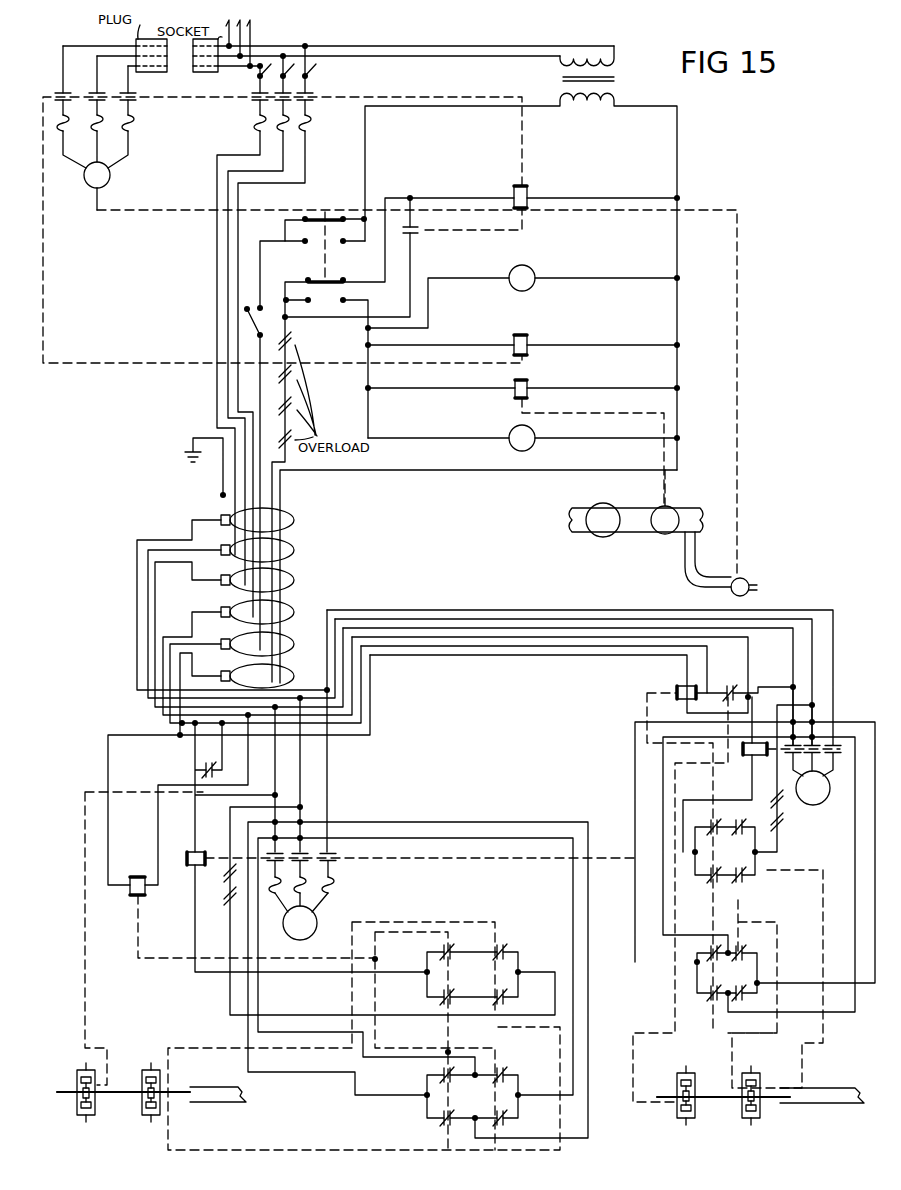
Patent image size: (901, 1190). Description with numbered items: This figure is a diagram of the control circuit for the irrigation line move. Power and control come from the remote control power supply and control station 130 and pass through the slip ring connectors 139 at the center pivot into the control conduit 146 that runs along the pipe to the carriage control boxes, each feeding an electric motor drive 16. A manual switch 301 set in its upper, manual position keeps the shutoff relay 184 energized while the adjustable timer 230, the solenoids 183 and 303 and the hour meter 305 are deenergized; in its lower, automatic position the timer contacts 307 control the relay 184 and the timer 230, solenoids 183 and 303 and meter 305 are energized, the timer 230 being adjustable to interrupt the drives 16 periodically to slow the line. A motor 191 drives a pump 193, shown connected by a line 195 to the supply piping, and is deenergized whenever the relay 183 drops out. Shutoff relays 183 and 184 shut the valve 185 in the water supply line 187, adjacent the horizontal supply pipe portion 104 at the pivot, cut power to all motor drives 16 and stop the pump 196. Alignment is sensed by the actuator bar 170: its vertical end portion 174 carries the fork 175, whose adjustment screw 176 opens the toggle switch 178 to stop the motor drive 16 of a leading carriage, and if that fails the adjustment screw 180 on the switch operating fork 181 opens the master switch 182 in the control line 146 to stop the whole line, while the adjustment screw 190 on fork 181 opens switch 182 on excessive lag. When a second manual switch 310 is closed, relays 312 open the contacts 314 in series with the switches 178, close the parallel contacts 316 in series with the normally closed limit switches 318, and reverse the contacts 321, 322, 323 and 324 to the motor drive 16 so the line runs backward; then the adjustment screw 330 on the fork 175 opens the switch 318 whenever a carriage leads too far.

The electric motor drive 16 is at (317, 917).
The horizontal portion of supply pipe 104 is at (706, 508).
The remote control power supply and control station 130 is at (537, 273).
The slip ring connectors 139 is at (295, 520).
The control conduit 146 is at (191, 753).
The actuator bar 170 is at (238, 1087).
The vertical end portion of actuator bar 174 is at (66, 1095).
The fork 175 is at (160, 1101).
The adjustment screw 176 is at (150, 1063).
The toggle switch 178 is at (506, 1001).
The adjustment screw 180 is at (85, 1063).
The switch operating fork 181 is at (77, 1086).
The master switch 182 is at (200, 770).
The shutoff relay 183 is at (529, 338).
The shutoff relay 184 is at (527, 188).
The valve 185 is at (672, 506).
The water supply line 187 is at (640, 508).
The adjustment screw 190 is at (86, 1122).
The motor 191 is at (110, 178).
The pump 193 is at (746, 580).
The pressure line 195 is at (696, 561).
The pump 196 is at (608, 503).
The adjustable timer 230 is at (530, 270).
The manual switch 301 is at (327, 203).
The solenoid 303 is at (531, 380).
The hour meter 305 is at (512, 433).
The timer contacts 307 is at (421, 235).
The manual switch 310 is at (262, 300).
The relay 312 is at (138, 877).
The contacts 314 is at (441, 996).
The parallel contacts 316 is at (441, 951).
The limit switch 318 is at (506, 950).
The reversing contact 321 is at (440, 1077).
The reversing contact 322 is at (505, 1074).
The reversing contact 323 is at (450, 1121).
The reversing contact 324 is at (505, 1122).
The adjustment screw 330 is at (151, 1122).